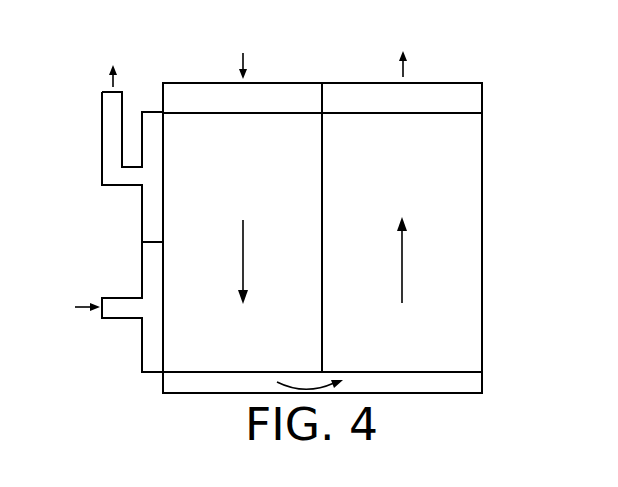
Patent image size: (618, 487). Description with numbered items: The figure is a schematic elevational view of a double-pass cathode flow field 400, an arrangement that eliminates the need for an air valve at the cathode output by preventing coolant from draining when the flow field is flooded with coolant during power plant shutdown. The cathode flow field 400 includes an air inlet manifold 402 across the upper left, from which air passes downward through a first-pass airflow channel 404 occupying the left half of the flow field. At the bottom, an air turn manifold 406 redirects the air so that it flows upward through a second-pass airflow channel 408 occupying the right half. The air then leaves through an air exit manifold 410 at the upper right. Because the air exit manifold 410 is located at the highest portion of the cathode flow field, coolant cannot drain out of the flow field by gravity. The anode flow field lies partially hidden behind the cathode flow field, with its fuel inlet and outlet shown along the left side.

The double-pass cathode flow field 400 is at (436, 58).
The air inlet manifold 402 is at (185, 97).
The first-pass airflow channel 404 is at (202, 210).
The air turn manifold 406 is at (193, 383).
The second-pass airflow channel 408 is at (472, 202).
The air exit manifold 410 is at (467, 99).